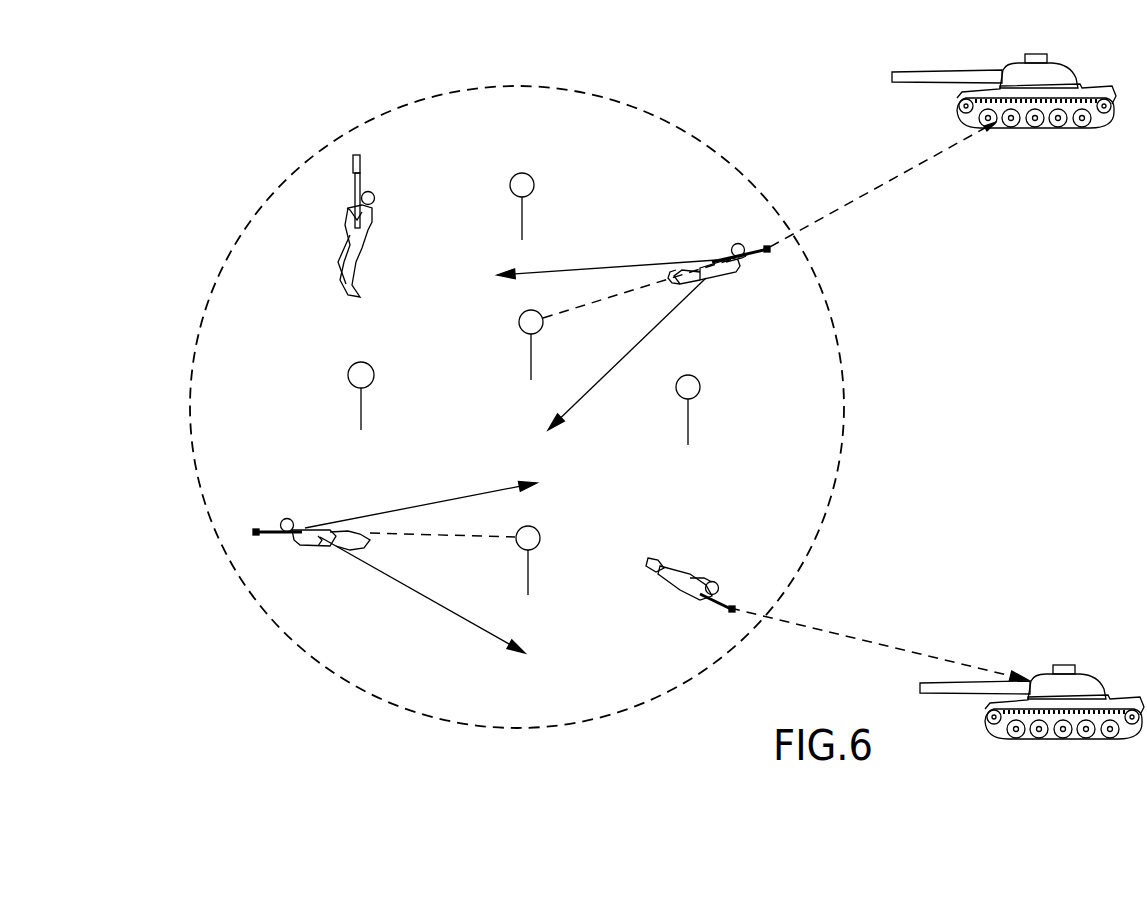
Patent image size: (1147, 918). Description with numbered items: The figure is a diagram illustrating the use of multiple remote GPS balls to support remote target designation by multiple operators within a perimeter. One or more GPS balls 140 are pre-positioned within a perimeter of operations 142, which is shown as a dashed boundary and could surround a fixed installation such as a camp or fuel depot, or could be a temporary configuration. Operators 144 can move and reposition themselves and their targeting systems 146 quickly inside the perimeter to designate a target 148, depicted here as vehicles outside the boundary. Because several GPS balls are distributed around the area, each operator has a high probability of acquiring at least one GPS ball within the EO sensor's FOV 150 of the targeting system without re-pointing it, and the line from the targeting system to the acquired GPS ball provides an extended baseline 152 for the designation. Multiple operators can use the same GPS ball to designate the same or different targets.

The GPS ball 140 is at (534, 185).
The perimeter of operations 142 is at (686, 124).
The operator 144 is at (722, 262).
The targeting system 146 is at (752, 275).
The target 148 is at (1036, 130).
The EO sensor's FOV 150 is at (619, 266).
The extended baseline 152 is at (569, 314).